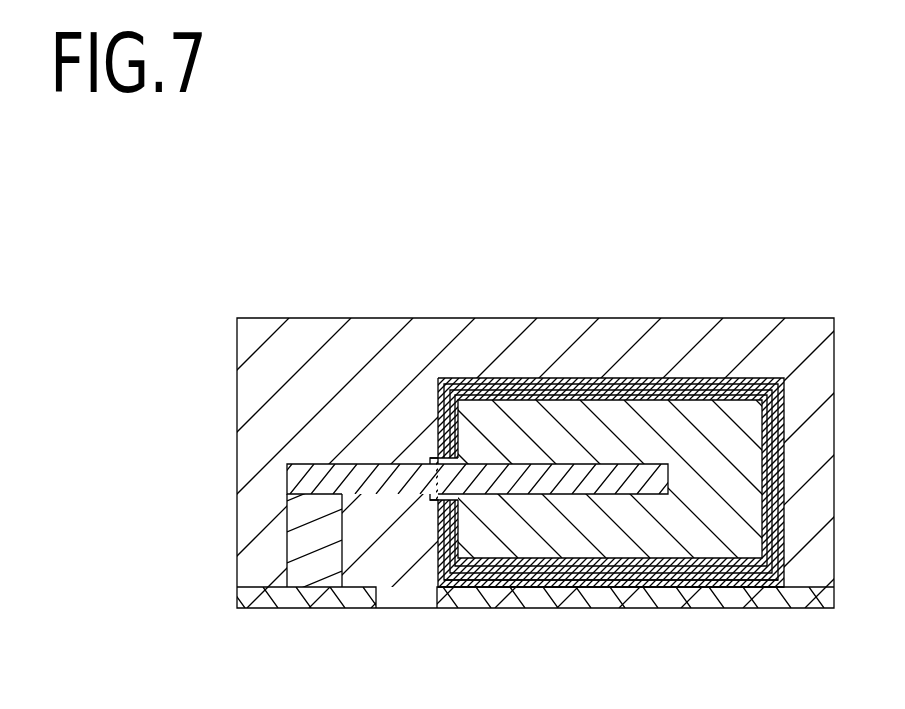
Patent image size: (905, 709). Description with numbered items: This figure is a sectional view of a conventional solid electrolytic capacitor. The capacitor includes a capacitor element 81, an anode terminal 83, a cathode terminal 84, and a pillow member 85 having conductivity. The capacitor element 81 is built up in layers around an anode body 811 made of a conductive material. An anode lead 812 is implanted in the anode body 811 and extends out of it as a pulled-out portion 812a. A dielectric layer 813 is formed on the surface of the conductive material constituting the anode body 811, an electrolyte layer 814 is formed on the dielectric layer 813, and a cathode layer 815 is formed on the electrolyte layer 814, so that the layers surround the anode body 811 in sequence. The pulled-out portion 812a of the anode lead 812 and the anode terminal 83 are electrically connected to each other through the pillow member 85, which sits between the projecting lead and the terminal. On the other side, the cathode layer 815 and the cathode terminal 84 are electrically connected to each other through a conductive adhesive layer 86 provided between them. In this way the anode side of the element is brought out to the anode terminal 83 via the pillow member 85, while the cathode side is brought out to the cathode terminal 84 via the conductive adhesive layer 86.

The capacitor element 81 is at (570, 430).
The anode body 811 is at (503, 435).
The anode lead 812 is at (570, 477).
The pulled-out portion 812a is at (307, 463).
The dielectric layer 813 is at (635, 395).
The electrolyte layer 814 is at (685, 388).
The cathode layer 815 is at (738, 382).
The anode terminal 83 is at (290, 598).
The cathode terminal 84 is at (737, 598).
The pillow member 85 is at (302, 540).
The conductive adhesive layer 86 is at (570, 587).